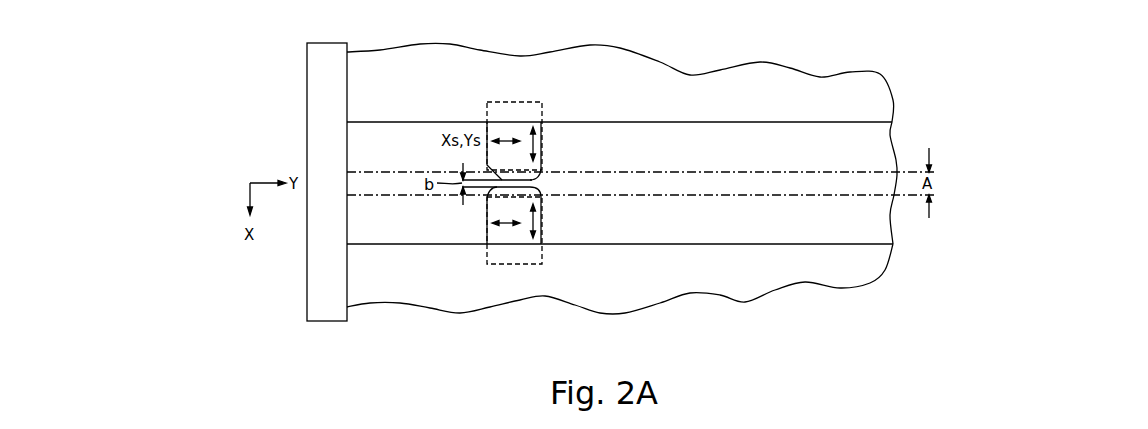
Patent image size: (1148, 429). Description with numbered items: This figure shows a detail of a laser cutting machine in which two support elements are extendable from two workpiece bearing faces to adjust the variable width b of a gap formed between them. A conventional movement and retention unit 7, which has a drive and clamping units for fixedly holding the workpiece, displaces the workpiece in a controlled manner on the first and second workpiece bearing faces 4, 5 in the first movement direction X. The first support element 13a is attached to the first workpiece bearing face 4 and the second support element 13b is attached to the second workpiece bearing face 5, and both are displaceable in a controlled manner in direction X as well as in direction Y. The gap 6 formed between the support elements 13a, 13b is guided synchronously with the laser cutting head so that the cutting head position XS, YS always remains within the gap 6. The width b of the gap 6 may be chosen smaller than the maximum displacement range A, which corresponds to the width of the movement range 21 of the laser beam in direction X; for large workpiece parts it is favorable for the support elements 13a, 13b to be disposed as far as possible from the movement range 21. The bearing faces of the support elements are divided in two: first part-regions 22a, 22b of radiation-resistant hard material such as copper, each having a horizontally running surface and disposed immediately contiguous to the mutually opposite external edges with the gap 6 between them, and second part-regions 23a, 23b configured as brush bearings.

The first workpiece bearing face 4 is at (428, 75).
The second workpiece bearing face 5 is at (427, 311).
The gap 6 is at (535, 183).
The movement and retention unit 7 is at (318, 108).
The first support element 13a is at (568, 155).
The second support element 13b is at (568, 203).
The movement range 21 is at (848, 182).
The first part-region 22a is at (541, 170).
The first part-region 22b is at (541, 197).
The second part-region 23a is at (518, 133).
The second part-region 23b is at (507, 237).